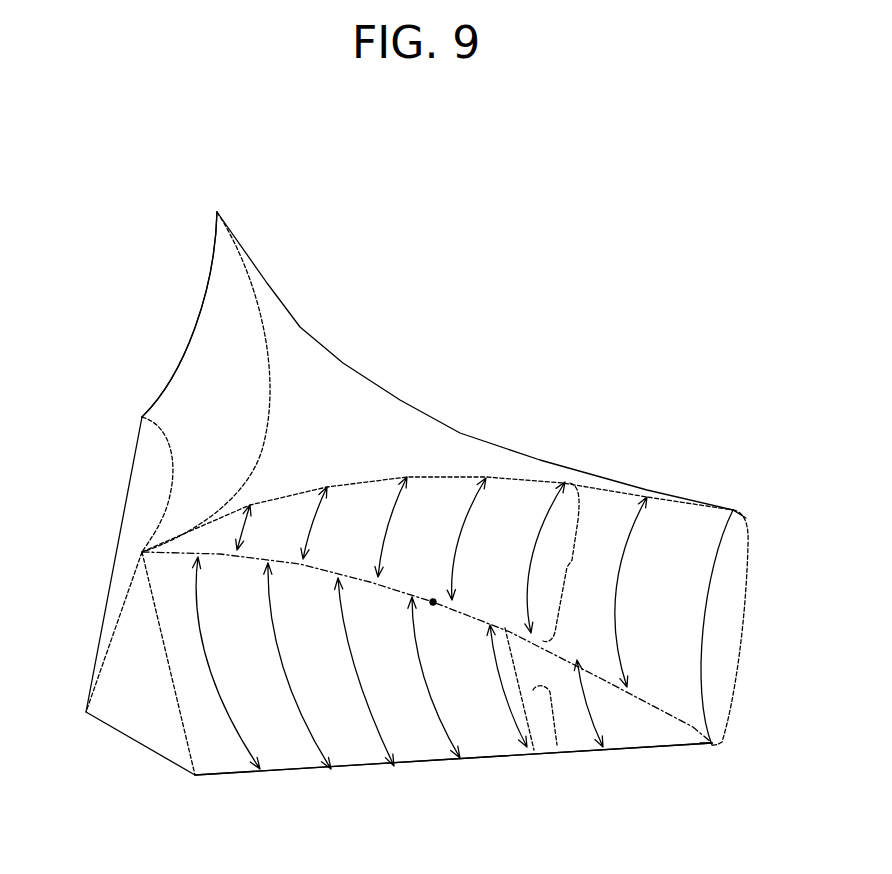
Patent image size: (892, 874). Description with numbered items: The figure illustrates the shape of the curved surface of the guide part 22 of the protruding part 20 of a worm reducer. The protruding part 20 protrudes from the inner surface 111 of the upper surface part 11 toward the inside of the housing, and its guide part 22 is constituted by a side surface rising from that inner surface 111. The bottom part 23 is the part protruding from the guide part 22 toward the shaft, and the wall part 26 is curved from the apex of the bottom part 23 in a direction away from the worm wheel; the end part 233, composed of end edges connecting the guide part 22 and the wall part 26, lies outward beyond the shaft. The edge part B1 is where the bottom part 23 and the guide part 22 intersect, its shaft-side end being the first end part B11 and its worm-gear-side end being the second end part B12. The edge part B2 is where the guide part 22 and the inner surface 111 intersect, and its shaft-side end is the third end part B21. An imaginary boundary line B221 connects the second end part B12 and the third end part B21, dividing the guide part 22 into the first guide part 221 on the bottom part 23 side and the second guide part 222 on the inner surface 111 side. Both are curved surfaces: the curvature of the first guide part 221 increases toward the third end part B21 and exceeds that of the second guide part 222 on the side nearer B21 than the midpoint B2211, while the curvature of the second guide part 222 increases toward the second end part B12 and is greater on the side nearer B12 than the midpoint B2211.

The protruding part 20 is at (561, 188).
The wall part 26 is at (350, 363).
The end part 233 is at (190, 341).
The bottom part 23 is at (388, 430).
The edge part B1 is at (460, 477).
The imaginary boundary line B221 is at (466, 612).
The midpoint B2211 is at (433, 603).
The first guide part 221 is at (568, 568).
The second guide part 222 is at (575, 715).
The guide part 22 is at (741, 622).
The first end part B11 is at (736, 510).
The third end part B21 is at (714, 744).
The second end part B12 is at (142, 552).
The edge part B2 is at (443, 767).
The upper surface part 11 is at (351, 849).
The inner surface 111 is at (616, 849).